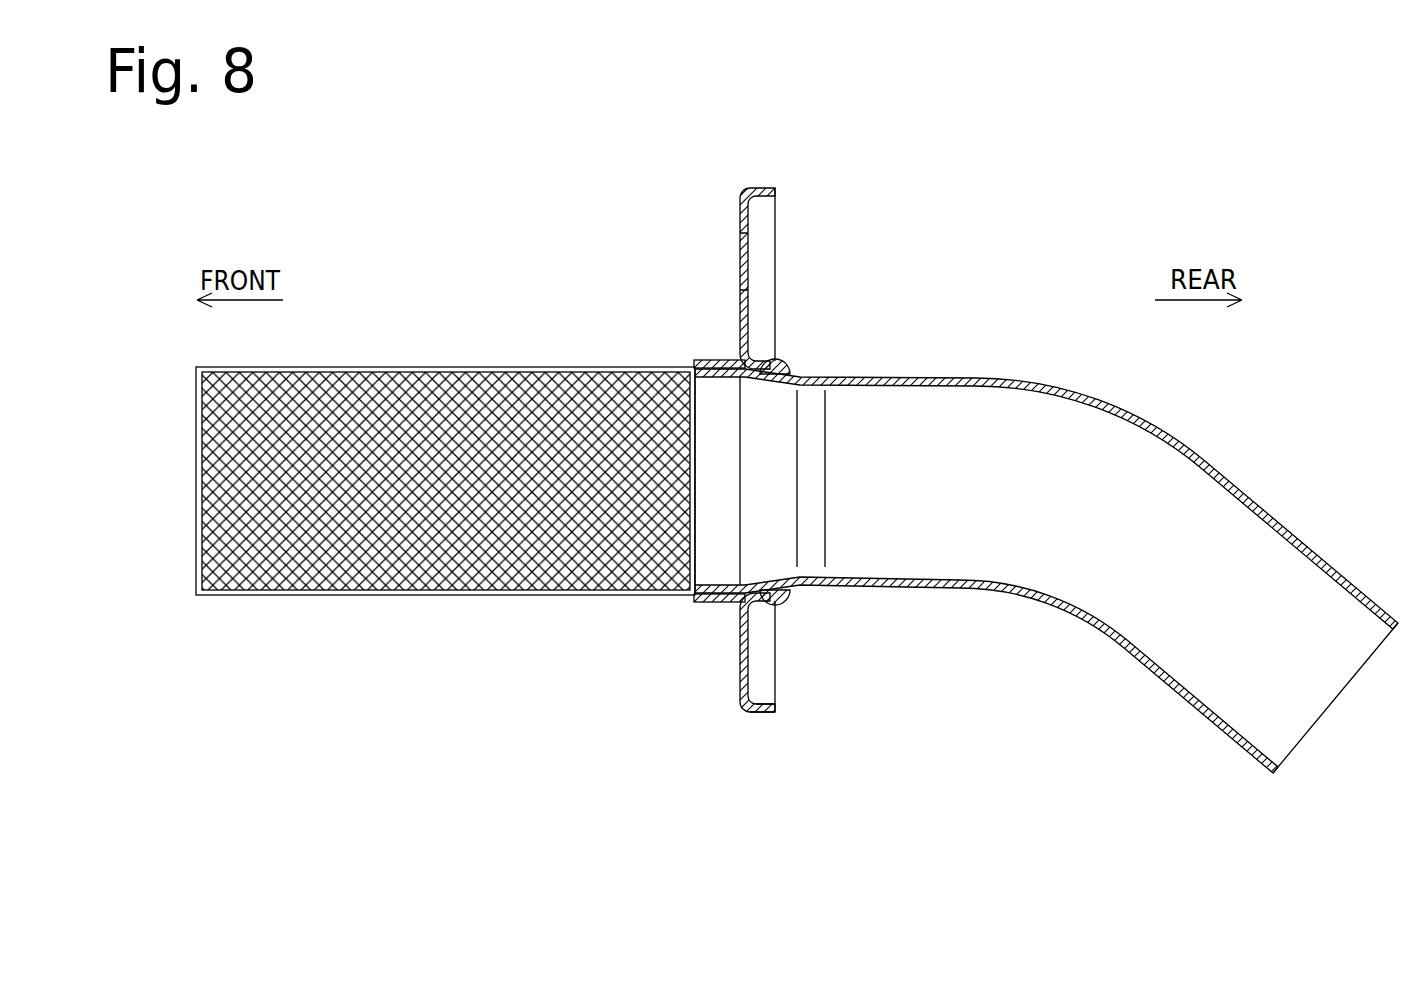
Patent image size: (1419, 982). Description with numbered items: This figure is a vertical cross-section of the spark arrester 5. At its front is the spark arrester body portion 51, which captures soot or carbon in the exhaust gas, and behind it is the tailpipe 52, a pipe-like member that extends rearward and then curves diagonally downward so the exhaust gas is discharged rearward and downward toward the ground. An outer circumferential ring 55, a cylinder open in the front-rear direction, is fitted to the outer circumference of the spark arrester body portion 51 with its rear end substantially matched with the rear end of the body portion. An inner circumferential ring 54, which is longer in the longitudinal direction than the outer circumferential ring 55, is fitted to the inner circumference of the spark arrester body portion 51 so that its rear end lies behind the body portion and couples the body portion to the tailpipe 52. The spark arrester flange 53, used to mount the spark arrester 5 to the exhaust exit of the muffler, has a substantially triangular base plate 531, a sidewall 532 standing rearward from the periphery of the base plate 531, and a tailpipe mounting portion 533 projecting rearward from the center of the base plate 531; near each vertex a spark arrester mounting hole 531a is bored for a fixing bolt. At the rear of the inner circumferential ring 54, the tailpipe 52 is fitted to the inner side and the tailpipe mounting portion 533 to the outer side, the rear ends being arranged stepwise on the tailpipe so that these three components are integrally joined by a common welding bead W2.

The spark arrester 5 is at (561, 213).
The spark arrester body portion 51 is at (477, 367).
The tailpipe 52 is at (1200, 714).
The spark arrester flange 53 is at (775, 197).
The base plate 531 is at (740, 662).
The spark arrester mounting hole 531a is at (741, 233).
The sidewall 532 is at (768, 713).
The tailpipe mounting portion 533 is at (760, 366).
The inner circumferential ring 54 is at (720, 378).
The outer circumferential ring 55 is at (703, 600).
The welding bead W2 is at (785, 602).